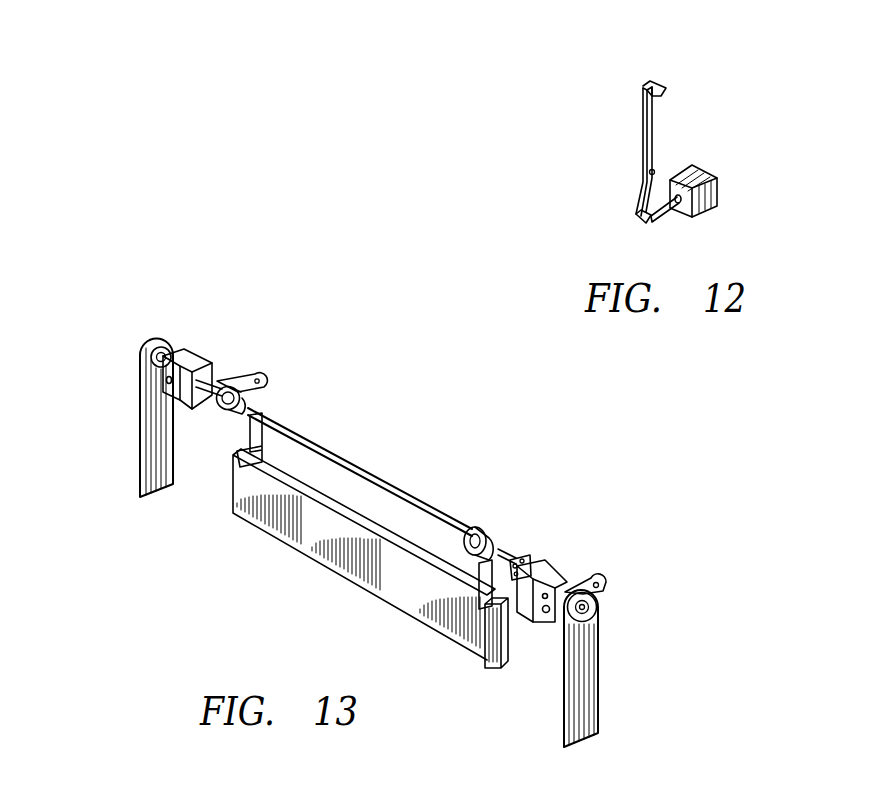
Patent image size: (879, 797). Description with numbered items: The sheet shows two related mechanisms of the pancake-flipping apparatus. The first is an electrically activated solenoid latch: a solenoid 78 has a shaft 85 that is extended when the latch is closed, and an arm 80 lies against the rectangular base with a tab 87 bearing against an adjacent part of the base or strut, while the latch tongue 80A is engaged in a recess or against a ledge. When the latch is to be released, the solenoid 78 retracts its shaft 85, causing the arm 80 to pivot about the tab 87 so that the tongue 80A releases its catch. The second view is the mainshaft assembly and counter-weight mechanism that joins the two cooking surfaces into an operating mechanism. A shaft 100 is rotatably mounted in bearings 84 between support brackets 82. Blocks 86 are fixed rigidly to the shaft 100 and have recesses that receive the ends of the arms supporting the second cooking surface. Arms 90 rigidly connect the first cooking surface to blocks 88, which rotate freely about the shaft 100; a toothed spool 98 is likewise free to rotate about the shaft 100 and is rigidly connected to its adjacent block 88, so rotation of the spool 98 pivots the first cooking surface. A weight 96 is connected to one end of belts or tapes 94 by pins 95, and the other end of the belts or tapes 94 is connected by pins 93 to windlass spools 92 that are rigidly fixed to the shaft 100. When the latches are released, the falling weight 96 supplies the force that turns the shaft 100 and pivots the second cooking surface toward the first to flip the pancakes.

In FIG. 12, the solenoid 78 is at (713, 192).
In FIG. 12, the arm 80 is at (645, 135).
In FIG. 12, the latch tongue 80A is at (660, 95).
In FIG. 12, the shaft 85 is at (663, 213).
In FIG. 12, the tab 87 is at (657, 172).
In FIG. 13, the support bracket 82 is at (145, 397).
In FIG. 13, the bearing 84 is at (168, 346).
In FIG. 13, the block 86 is at (177, 362).
In FIG. 13, the block 88 is at (185, 392).
In FIG. 13, the arm 90 is at (243, 375).
In FIG. 13, the windlass spool 92 is at (258, 402).
In FIG. 13, the pin 93 is at (233, 413).
In FIG. 13, the belt or tape 94 is at (243, 437).
In FIG. 13, the pin 95 is at (483, 598).
In FIG. 13, the weight 96 is at (310, 547).
In FIG. 13, the toothed spool 98 is at (526, 557).
In FIG. 13, the shaft 100 is at (365, 477).